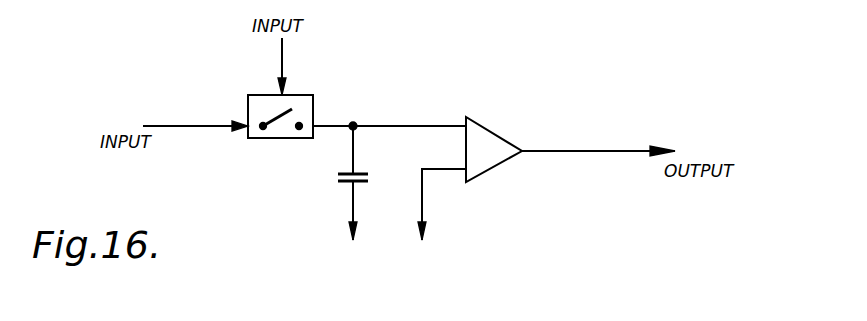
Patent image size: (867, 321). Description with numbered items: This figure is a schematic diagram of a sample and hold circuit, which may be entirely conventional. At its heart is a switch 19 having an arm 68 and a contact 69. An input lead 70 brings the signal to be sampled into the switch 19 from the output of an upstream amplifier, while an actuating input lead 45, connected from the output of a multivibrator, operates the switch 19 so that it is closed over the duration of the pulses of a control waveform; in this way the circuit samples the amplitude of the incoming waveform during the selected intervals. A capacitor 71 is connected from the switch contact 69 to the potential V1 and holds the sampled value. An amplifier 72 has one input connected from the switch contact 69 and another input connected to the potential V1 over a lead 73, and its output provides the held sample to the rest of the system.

The switch 19 is at (281, 148).
The actuating input lead 45 is at (283, 63).
The arm 68 is at (268, 114).
The contact 69 is at (304, 121).
The input lead 70 is at (172, 126).
The capacitor 71 is at (339, 179).
The amplifier 72 is at (497, 127).
The lead 73 is at (446, 169).